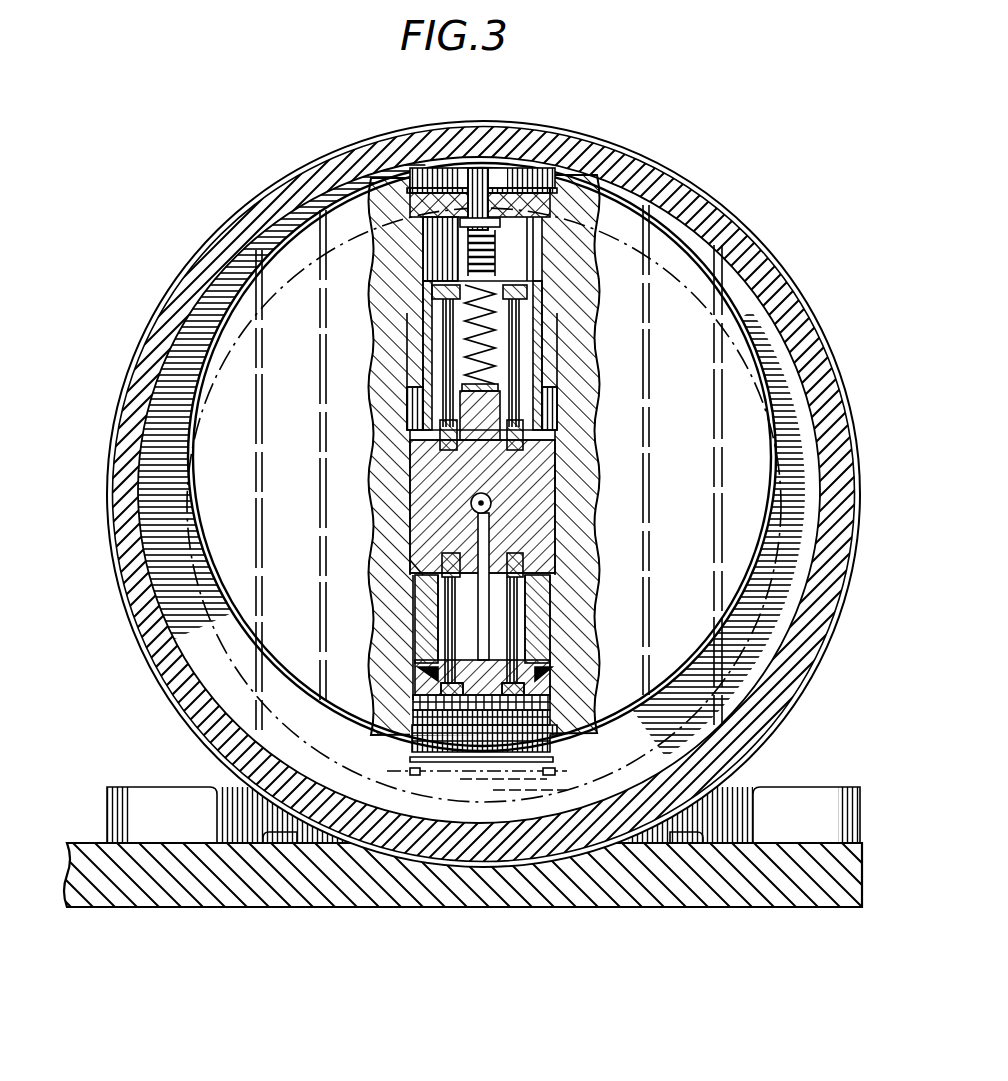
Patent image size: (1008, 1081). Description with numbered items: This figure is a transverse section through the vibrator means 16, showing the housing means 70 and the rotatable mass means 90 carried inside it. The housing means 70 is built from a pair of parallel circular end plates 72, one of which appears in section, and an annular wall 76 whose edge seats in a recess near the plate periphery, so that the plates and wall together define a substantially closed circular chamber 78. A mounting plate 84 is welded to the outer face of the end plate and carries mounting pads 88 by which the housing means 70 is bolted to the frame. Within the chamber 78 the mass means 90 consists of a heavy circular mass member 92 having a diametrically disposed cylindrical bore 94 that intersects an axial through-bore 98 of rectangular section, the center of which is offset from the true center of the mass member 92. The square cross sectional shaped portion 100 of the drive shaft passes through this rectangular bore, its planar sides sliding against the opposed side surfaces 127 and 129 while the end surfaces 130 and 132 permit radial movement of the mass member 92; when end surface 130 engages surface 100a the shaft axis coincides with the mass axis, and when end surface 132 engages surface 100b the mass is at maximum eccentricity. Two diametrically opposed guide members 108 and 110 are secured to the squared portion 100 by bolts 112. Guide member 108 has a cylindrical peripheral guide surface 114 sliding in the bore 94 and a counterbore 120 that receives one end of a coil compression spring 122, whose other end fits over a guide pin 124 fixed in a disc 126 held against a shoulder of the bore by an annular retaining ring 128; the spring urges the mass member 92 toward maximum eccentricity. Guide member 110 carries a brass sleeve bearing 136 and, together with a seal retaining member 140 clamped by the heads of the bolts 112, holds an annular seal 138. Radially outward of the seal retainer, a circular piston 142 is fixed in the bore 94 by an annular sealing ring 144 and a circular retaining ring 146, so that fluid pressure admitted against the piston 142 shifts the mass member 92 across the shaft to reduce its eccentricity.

The vibrator means 16 is at (207, 193).
The housing means 70 is at (756, 230).
The end plates 72 is at (815, 521).
The annular wall 76 is at (830, 600).
The chamber 78 is at (797, 627).
The mounting plate 84 is at (717, 815).
The mounting pads 88 is at (808, 805).
The mass means 90 is at (702, 694).
The mass member 92 is at (666, 697).
The bore 94 is at (600, 190).
The through-bore 98 is at (553, 407).
The square cross sectional shaped portion 100 is at (541, 505).
The surface 100a is at (556, 446).
The surface 100b is at (546, 571).
The guide member 108 is at (541, 357).
The guide member 110 is at (548, 653).
The bolts 112 is at (514, 340).
The cylindrical peripheral guide surface 114 is at (541, 300).
The counterbore 120 is at (468, 328).
The coil compression spring 122 is at (497, 268).
The guide pin 124 is at (503, 235).
The disc 126 is at (452, 165).
The side surface 127 is at (412, 511).
The annular retaining ring 128 is at (533, 162).
The side surface 129 is at (556, 472).
The end surface 130 is at (409, 412).
The end surface 132 is at (424, 565).
The brass sleeve bearing 136 is at (546, 633).
The annular seal 138 is at (550, 672).
The seal retaining member 140 is at (428, 668).
The piston 142 is at (548, 705).
The annular sealing ring 144 is at (410, 705).
The circular retaining ring 146 is at (558, 703).